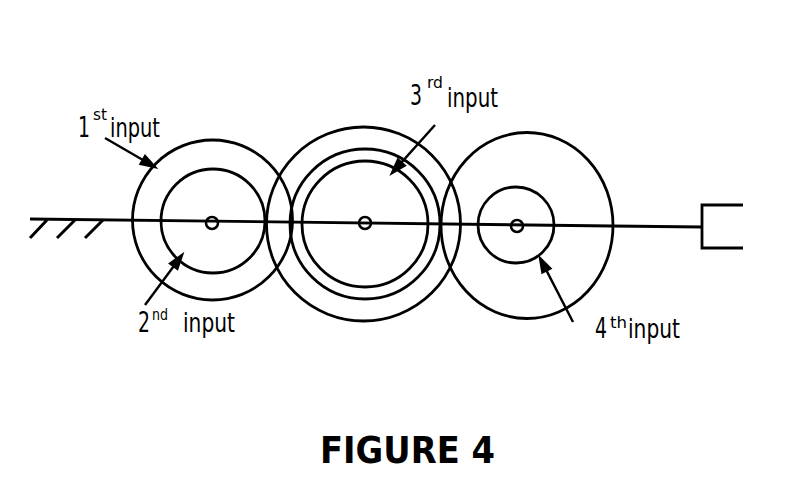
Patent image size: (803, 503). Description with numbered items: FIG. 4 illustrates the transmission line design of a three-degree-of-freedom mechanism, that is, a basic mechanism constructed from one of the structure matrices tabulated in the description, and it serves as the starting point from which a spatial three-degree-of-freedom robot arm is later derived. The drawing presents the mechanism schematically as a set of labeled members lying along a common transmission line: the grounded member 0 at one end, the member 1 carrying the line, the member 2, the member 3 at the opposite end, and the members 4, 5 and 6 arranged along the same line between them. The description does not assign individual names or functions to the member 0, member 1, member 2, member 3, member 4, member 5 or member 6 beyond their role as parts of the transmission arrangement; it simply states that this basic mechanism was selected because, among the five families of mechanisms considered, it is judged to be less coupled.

The fixed ground support 0 is at (66, 215).
The main shaft axis 1 is at (321, 214).
The ring gear of middle gear set 2 is at (364, 205).
The output shaft 3 is at (677, 225).
The first input gear 4 is at (213, 205).
The second input gear 5 is at (213, 210).
The third input gear 6 is at (365, 224).